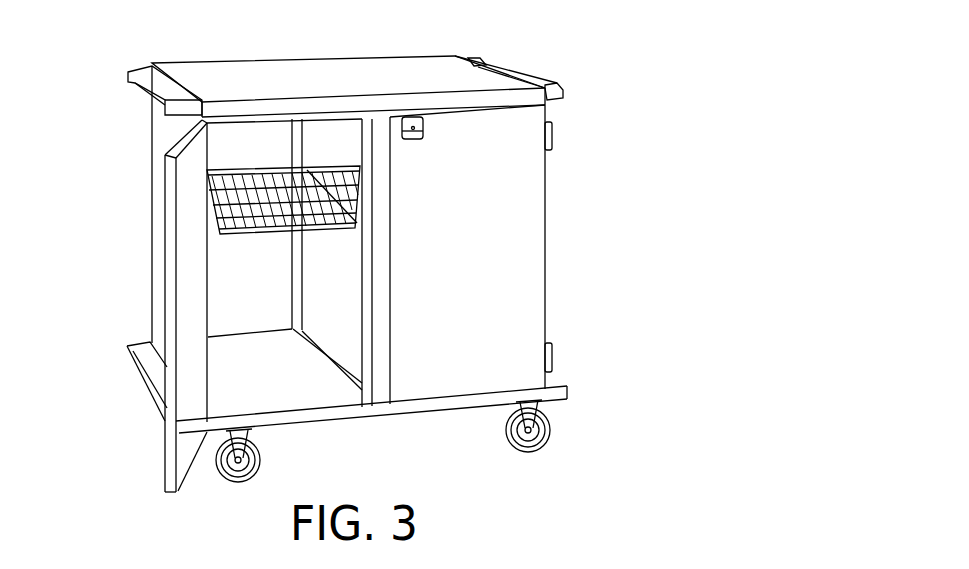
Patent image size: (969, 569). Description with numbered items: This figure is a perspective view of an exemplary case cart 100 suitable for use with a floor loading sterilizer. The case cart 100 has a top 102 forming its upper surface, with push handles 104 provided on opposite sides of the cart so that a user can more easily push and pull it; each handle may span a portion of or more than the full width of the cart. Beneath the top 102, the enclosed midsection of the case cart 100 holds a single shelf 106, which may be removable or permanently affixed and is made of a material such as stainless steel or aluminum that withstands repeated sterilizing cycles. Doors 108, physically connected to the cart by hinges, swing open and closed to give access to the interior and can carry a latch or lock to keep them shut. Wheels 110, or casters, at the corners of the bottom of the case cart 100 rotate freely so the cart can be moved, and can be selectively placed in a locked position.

The case cart 100 is at (78, 82).
The top 102 is at (409, 78).
The push handles 104 is at (152, 68).
The shelf 106 is at (230, 201).
The doors 108 is at (190, 371).
The wheels 110 is at (261, 460).